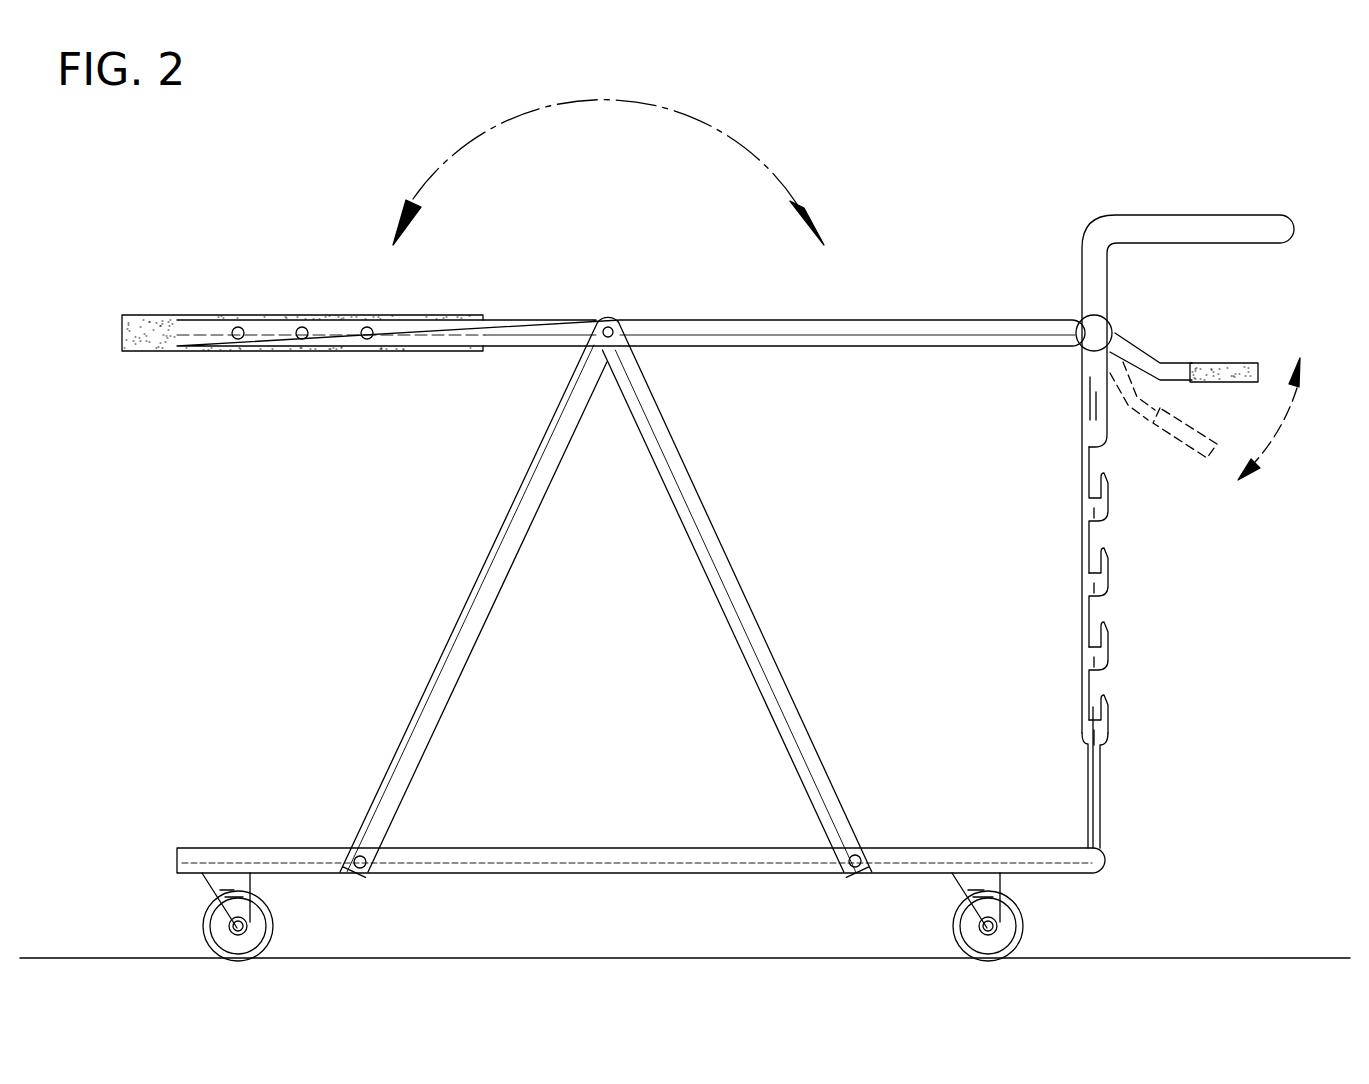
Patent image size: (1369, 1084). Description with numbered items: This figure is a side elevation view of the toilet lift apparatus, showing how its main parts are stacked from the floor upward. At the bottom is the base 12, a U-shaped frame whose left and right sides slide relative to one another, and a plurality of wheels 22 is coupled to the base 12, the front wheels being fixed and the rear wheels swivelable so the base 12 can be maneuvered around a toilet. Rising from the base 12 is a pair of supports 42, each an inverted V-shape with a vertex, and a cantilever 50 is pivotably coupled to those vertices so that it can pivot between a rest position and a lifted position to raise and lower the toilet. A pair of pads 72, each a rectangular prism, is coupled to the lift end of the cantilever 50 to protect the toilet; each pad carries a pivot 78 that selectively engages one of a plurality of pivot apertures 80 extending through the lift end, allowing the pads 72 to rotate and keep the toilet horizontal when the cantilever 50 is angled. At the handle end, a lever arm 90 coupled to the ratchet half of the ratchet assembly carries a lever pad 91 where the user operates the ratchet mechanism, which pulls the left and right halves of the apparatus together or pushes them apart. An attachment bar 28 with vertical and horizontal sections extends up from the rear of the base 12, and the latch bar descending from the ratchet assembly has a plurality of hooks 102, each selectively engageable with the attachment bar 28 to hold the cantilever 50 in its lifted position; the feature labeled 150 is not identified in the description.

The base 12 is at (1050, 865).
The plurality of wheels 22 is at (258, 942).
The attachment bar 28 is at (1092, 782).
The pair of supports 42 is at (728, 595).
The cantilever 50 is at (758, 333).
The pair of pads 72 is at (153, 340).
The pivot 78 is at (303, 339).
The plurality of pivot apertures 80 is at (367, 326).
The lever arm 90 is at (1138, 355).
The lever pad 91 is at (1233, 374).
The plurality of hooks 102 is at (1108, 488).
The hook slot 150 is at (1089, 507).